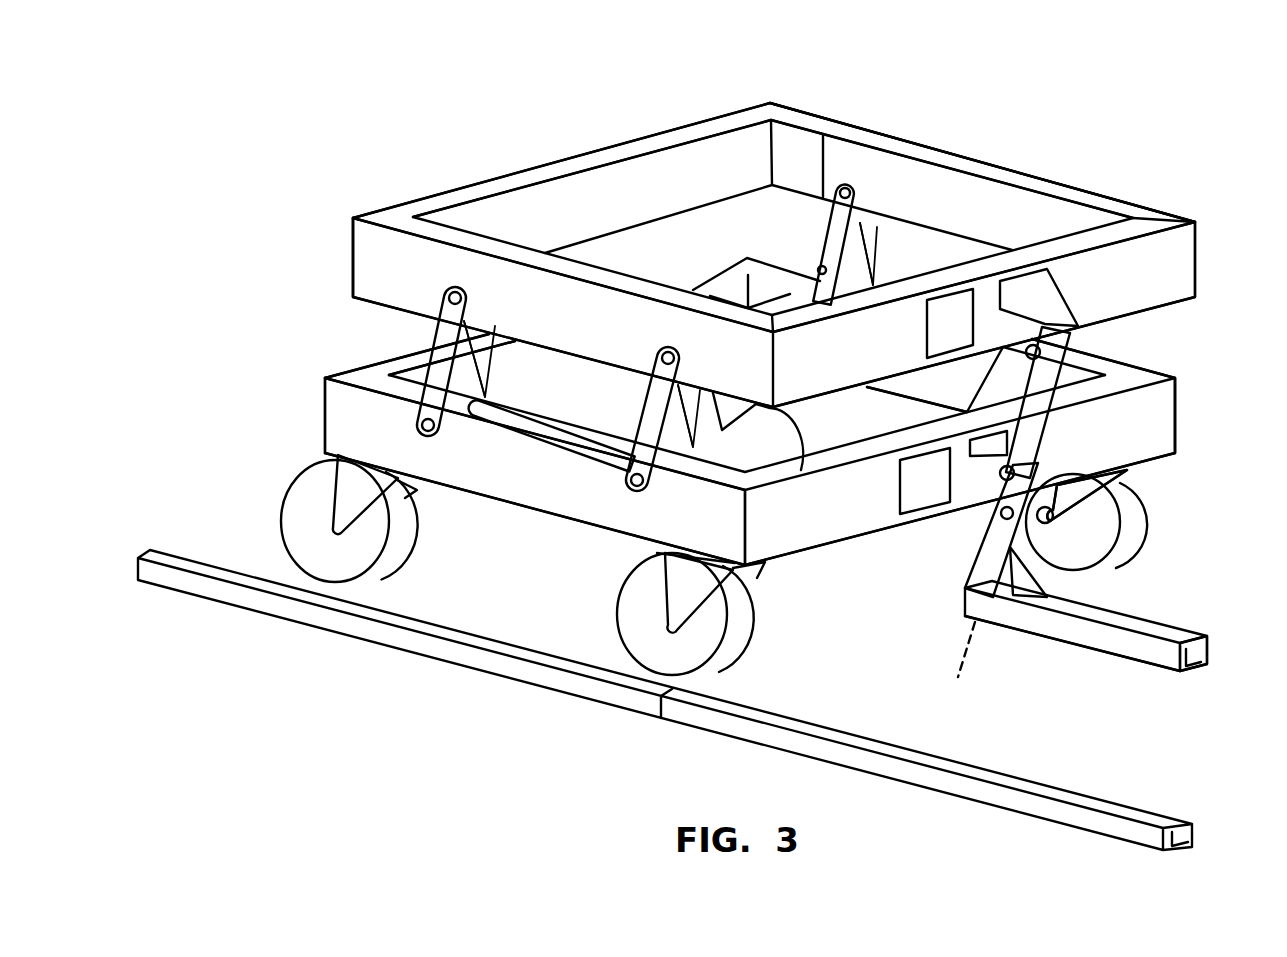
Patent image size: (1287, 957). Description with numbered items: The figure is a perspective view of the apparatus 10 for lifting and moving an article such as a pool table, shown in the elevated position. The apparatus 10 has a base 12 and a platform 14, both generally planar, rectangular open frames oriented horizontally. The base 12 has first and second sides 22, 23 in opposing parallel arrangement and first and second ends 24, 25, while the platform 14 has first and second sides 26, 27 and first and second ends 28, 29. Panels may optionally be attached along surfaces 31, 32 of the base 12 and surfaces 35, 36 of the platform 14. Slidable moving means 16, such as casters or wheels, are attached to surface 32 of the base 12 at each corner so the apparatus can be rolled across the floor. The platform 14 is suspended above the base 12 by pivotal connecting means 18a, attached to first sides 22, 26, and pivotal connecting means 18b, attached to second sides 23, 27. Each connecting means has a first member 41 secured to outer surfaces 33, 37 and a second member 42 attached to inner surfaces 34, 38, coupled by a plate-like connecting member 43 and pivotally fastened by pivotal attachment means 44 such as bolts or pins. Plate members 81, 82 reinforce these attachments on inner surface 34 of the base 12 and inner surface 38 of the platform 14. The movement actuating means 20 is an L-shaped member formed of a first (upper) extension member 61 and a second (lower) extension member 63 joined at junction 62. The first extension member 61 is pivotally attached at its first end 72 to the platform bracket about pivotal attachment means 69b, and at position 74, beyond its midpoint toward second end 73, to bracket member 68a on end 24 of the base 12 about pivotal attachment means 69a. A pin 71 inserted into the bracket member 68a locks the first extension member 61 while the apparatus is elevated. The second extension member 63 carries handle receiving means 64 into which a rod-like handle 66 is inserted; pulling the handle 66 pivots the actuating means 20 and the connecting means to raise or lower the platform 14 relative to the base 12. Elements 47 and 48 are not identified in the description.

The apparatus for lifting and moving an article 10 is at (1143, 140).
The base 12 is at (1180, 392).
The platform 14 is at (1193, 243).
The slidable moving means 16 is at (281, 508).
The pivotal connecting means 18a is at (832, 242).
The pivotal connecting means 18b is at (427, 352).
The movement actuating means 20 is at (997, 613).
The first side of base 22 is at (1110, 362).
The second side of base 23 is at (590, 508).
The first end of base 24 is at (1160, 427).
The second end of base 25 is at (380, 365).
The first side of platform 26 is at (843, 128).
The second side of platform 27 is at (362, 263).
The first end of platform 28 is at (1178, 290).
The second end of platform 29 is at (457, 198).
The surface of base 31 is at (350, 375).
The surface of base 32 is at (483, 497).
The outer surface of base 33 is at (332, 422).
The inner surface of base 34 is at (927, 392).
The surface of platform 35 is at (555, 167).
The surface of platform 36 is at (656, 231).
The outer surface of platform 37 is at (348, 237).
The inner surface of platform 38 is at (623, 182).
The first member 41 is at (423, 413).
The second member 42 is at (477, 343).
The connecting member 43 is at (460, 383).
The pivotal attachment means 44 is at (628, 482).
The middle link 47 is at (650, 372).
The connecting bar 48 is at (678, 460).
The first extension member 61 is at (1043, 423).
The junction 62 is at (968, 612).
The second extension member 63 is at (1100, 640).
The handle receiving means 64 is at (1187, 663).
The handle 66 is at (1105, 802).
The bracket member 68a is at (1037, 280).
The pivotal attachment means 69a is at (1003, 476).
The pivotal attachment means 69b is at (1027, 358).
The pin 71 is at (980, 542).
The first end 72 is at (1060, 333).
The second end 73 is at (959, 663).
The position 74 is at (1127, 493).
The plate member 81 is at (915, 382).
The plate member 82 is at (948, 185).